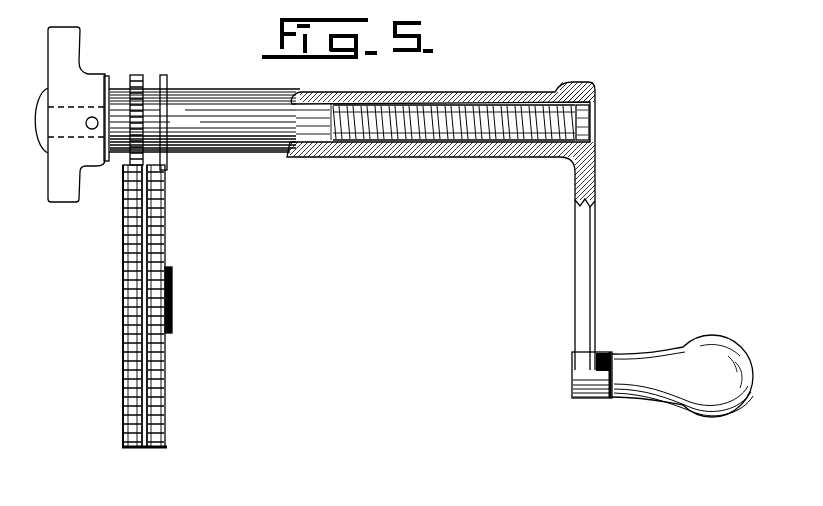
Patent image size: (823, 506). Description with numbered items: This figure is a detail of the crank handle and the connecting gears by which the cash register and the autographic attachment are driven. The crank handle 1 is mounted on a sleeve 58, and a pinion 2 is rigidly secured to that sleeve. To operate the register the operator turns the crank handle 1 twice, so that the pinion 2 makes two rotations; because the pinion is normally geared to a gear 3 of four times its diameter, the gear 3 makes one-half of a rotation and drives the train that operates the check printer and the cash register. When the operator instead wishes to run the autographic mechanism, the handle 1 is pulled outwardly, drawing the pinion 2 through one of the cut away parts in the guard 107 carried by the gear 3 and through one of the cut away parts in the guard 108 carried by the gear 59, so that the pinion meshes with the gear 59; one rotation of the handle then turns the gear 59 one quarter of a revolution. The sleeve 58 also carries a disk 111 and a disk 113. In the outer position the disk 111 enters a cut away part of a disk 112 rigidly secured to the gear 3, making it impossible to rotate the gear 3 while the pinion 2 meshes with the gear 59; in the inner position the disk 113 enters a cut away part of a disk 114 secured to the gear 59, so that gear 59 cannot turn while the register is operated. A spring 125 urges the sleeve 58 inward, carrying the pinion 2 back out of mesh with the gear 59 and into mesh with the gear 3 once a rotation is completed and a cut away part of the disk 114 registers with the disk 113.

The crank handle 1 is at (632, 353).
The pinion 2 is at (133, 75).
The gear 3 is at (133, 238).
The sleeve 58 is at (310, 158).
The gear 59 is at (155, 208).
The guard 107 is at (140, 450).
The guard 108 is at (145, 450).
The disk 111 is at (107, 76).
The disk 112 is at (125, 408).
The disk 113 is at (164, 75).
The disk 114 is at (162, 373).
The spring 125 is at (412, 158).